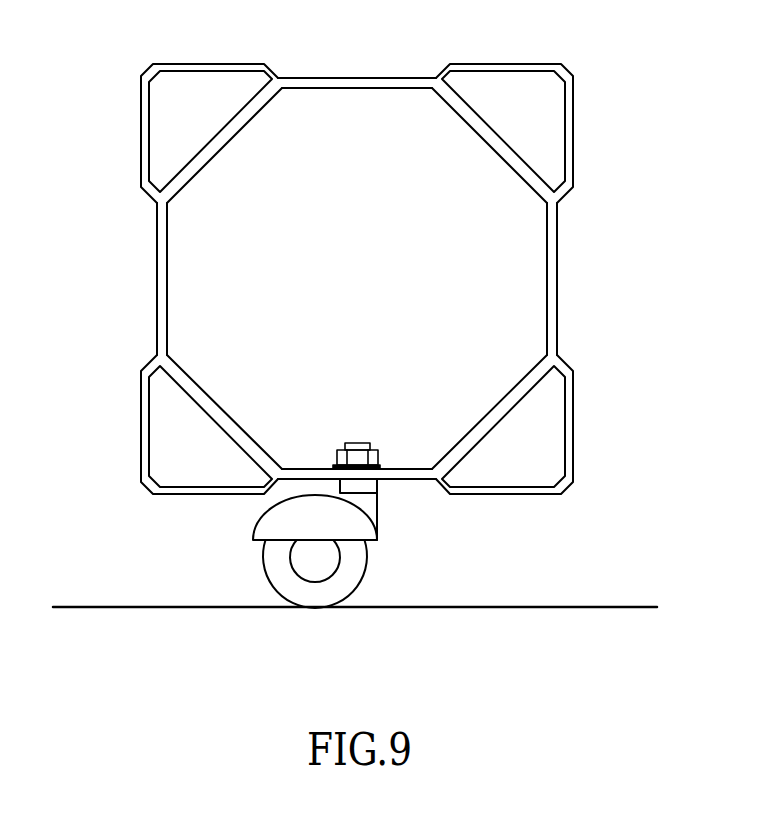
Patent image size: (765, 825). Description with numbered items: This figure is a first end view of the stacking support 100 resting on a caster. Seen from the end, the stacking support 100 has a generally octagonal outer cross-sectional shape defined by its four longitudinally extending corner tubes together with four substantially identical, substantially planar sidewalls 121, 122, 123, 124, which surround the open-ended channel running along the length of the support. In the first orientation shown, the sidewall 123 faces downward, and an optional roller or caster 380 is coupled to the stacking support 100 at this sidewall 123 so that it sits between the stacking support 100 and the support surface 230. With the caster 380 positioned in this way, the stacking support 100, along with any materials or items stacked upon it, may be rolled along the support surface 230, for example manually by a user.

The stacking support 100 is at (575, 122).
The sidewall 121 is at (353, 78).
The sidewall 122 is at (557, 277).
The sidewall 123 is at (312, 465).
The sidewall 124 is at (157, 273).
The roller or caster 380 is at (377, 513).
The support surface 230 is at (532, 607).